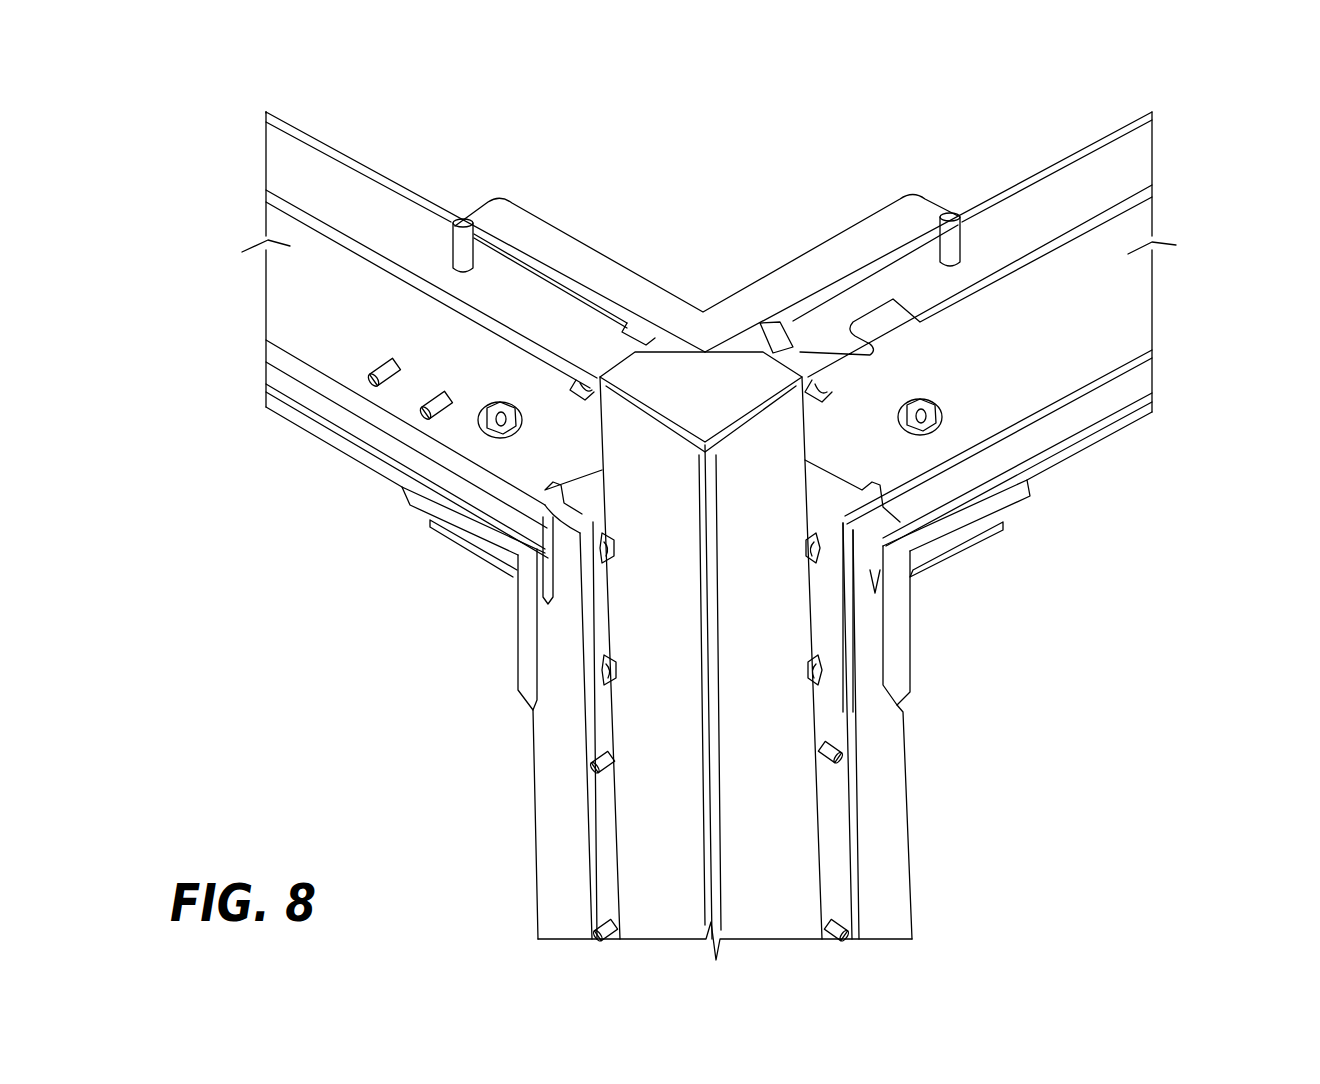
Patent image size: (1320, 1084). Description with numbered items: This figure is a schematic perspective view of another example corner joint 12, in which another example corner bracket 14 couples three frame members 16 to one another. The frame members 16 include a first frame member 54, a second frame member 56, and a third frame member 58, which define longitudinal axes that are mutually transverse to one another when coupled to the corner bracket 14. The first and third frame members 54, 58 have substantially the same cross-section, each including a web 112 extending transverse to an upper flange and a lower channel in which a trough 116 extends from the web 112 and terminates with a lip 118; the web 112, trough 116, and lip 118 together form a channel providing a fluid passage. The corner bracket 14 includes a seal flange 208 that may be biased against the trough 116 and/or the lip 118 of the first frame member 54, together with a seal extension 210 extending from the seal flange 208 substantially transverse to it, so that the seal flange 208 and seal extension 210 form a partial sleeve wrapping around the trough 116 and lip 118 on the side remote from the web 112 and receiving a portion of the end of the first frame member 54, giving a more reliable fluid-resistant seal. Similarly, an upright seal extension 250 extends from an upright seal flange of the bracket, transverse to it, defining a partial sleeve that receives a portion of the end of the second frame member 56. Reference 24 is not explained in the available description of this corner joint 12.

The corner joint 12 is at (688, 176).
The corner bracket 14 is at (842, 227).
The frame members 16 is at (300, 134).
The panel assembly 24 is at (433, 97).
The first frame member 54 is at (1142, 290).
The second frame member 56 is at (813, 941).
The third frame member 58 is at (266, 338).
The web 112 is at (1142, 323).
The trough 116 is at (1142, 377).
The lip 118 is at (1120, 418).
The seal flange 208 is at (490, 564).
The seal extension 210 is at (417, 508).
The upright seal extension 250 is at (517, 657).